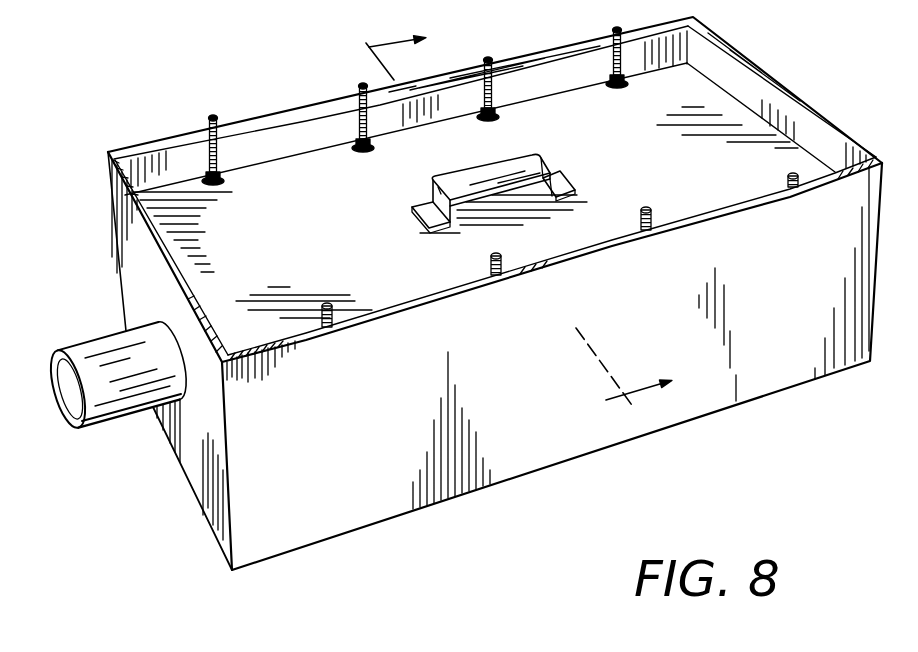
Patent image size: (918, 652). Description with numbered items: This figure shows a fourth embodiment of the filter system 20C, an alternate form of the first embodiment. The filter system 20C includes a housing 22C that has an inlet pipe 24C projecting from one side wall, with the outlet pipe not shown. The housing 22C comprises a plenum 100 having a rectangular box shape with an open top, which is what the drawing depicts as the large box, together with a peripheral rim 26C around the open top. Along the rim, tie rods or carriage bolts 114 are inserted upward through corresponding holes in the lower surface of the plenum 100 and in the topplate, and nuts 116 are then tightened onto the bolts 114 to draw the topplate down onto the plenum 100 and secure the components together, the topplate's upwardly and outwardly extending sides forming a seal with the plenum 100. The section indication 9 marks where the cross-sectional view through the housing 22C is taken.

The filter system 20C is at (209, 590).
The housing 22C is at (305, 549).
The inlet pipe 24C is at (105, 420).
The peripheral rim flange 26C is at (806, 102).
The plenum 100 is at (484, 489).
The carriage bolts 114 is at (217, 118).
The nuts 116 is at (205, 174).
The section line 9- 9 is at (506, 228).